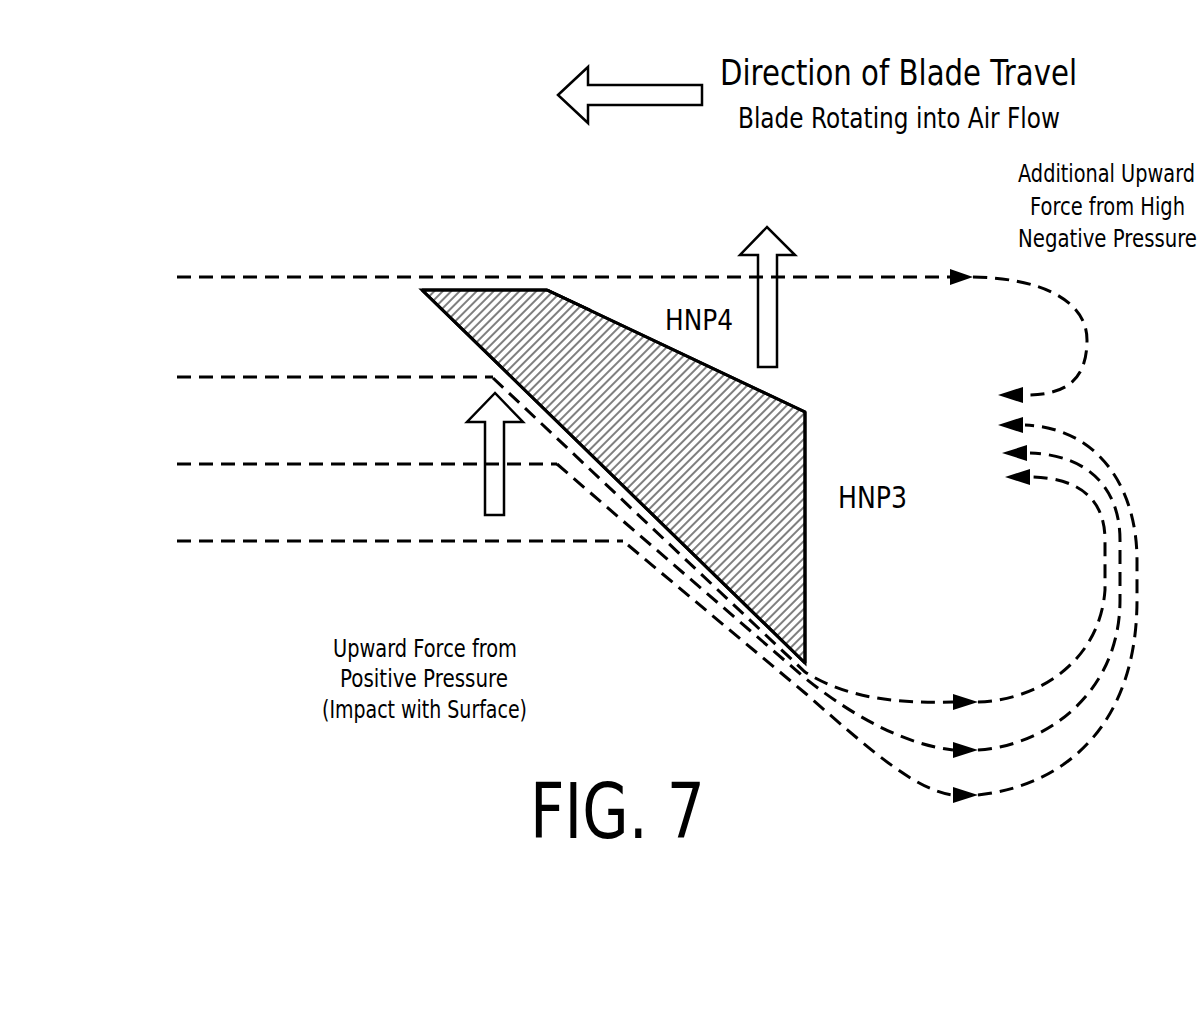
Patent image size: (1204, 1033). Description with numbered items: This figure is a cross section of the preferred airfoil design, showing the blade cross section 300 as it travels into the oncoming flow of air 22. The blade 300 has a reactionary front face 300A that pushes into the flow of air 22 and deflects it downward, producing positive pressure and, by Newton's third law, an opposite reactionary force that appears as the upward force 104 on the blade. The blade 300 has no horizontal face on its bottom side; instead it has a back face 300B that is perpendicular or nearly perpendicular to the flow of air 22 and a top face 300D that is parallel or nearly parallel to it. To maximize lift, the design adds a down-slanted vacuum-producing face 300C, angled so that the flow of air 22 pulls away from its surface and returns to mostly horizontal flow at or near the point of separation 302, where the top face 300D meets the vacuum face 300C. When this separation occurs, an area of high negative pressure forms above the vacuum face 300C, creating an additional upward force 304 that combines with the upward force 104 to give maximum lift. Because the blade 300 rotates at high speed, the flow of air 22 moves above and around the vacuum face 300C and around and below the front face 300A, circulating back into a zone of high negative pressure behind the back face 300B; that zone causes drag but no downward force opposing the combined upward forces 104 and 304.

The flow of air 22 is at (238, 282).
The blade cross section 300 is at (486, 262).
The reactionary front face 300A is at (463, 338).
The back face 300B is at (813, 593).
The vacuum-producing face 300C is at (780, 393).
The top face 300D is at (512, 283).
The point of separation 302 is at (567, 288).
The additional upward force 304 is at (797, 270).
The upward force 104 is at (495, 498).